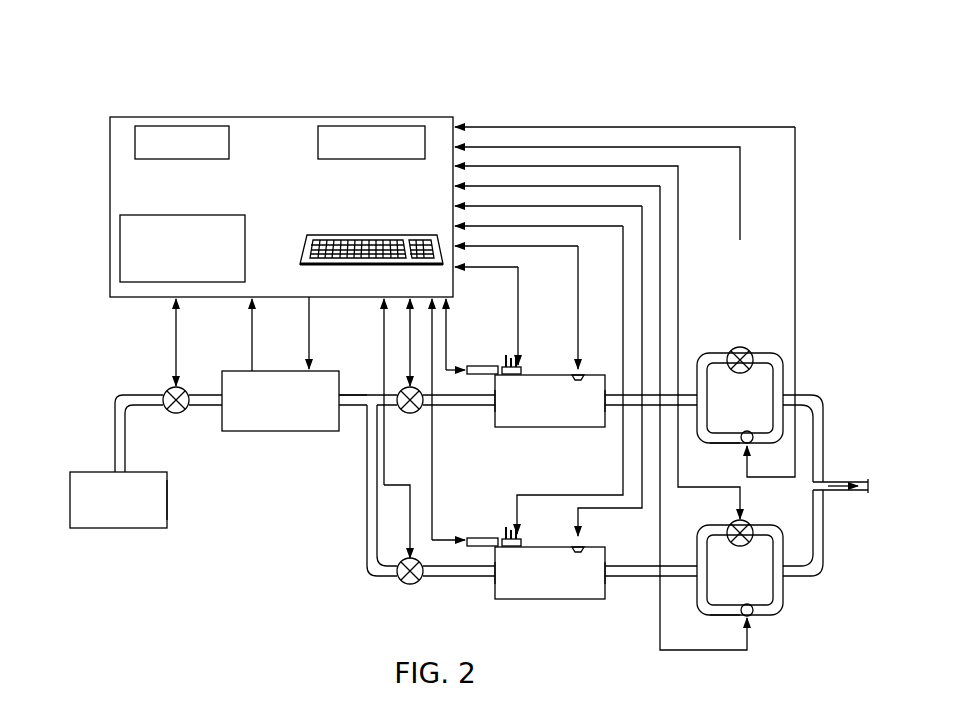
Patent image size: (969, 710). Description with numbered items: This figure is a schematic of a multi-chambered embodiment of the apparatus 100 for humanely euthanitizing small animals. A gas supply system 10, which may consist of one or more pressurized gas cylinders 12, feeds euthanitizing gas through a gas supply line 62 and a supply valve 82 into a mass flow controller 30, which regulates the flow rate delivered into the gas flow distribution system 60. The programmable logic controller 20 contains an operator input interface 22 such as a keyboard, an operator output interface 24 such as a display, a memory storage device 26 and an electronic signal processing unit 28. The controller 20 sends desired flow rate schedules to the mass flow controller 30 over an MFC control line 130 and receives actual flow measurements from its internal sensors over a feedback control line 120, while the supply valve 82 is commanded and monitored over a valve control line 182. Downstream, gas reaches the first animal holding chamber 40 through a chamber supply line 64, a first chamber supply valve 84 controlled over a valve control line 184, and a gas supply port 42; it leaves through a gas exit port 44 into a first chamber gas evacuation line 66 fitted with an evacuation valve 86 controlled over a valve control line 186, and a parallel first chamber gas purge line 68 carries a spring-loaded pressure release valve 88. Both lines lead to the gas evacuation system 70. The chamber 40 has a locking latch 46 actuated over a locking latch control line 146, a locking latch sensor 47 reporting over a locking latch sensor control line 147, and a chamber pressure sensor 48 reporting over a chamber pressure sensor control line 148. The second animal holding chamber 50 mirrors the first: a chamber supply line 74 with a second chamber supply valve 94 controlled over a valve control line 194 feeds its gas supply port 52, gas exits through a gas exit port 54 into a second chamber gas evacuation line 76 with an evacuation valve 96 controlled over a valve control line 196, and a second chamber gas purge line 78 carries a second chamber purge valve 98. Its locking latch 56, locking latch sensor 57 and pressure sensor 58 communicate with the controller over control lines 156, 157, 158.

The gas supply system 10 is at (114, 528).
The pressurized gas cylinder 12 is at (167, 497).
The programmable logic controller 20 is at (248, 117).
The operator input interface 22 is at (337, 235).
The operator output interface 24 is at (358, 126).
The memory storage device 26 is at (186, 126).
The electronic signal processing unit 28 is at (181, 215).
The mass flow controller 30 is at (268, 431).
The first animal holding chamber 40 is at (545, 427).
The gas supply port 42 is at (495, 403).
The gas exit port 44 is at (604, 421).
The locking latch 46 is at (482, 366).
The locking latch sensor 47 is at (520, 365).
The chamber pressure sensor 48 is at (583, 374).
The second animal holding chamber 50 is at (545, 599).
The gas supply port 52 is at (495, 576).
The gas exit port 54 is at (605, 596).
The locking latch 56 is at (483, 538).
The locking latch sensor 57 is at (520, 540).
The pressure sensor 58 is at (585, 547).
The gas flow distribution system 60 is at (348, 458).
The gas supply line 62 is at (115, 428).
The chamber supply line 64 is at (350, 395).
The first chamber gas evacuation line 66 is at (722, 354).
The first chamber gas purge line 68 is at (726, 444).
The gas evacuation system 70 is at (836, 481).
The chamber supply line 74 is at (367, 540).
The second chamber gas evacuation line 76 is at (722, 526).
The second chamber gas purge line 78 is at (722, 616).
The supply valve 82 is at (166, 391).
The first chamber supply valve 84 is at (410, 413).
The evacuation valve 86 is at (751, 352).
The pressure release valve 88 is at (748, 431).
The second chamber supply valve 94 is at (410, 585).
The evacuation valve 96 is at (751, 525).
The second chamber purge valve 98 is at (748, 604).
The apparatus 100 is at (556, 104).
The feedback control line 120 is at (252, 343).
The MFC control line 130 is at (309, 322).
The locking latch control line 146 is at (447, 330).
The locking latch sensor control line 147 is at (518, 328).
The chamber pressure sensor control line 148 is at (578, 288).
The control line 156 is at (433, 482).
The control line 157 is at (547, 493).
The control line 158 is at (623, 468).
The valve control line 182 is at (176, 342).
The valve control line 184 is at (410, 323).
The valve control line 186 is at (740, 240).
The valve control line 194 is at (384, 347).
The valve control line 196 is at (679, 228).